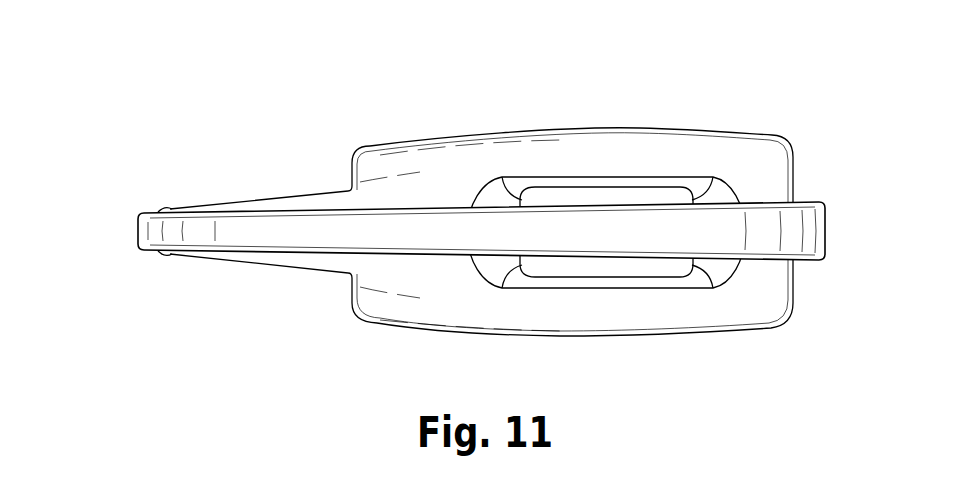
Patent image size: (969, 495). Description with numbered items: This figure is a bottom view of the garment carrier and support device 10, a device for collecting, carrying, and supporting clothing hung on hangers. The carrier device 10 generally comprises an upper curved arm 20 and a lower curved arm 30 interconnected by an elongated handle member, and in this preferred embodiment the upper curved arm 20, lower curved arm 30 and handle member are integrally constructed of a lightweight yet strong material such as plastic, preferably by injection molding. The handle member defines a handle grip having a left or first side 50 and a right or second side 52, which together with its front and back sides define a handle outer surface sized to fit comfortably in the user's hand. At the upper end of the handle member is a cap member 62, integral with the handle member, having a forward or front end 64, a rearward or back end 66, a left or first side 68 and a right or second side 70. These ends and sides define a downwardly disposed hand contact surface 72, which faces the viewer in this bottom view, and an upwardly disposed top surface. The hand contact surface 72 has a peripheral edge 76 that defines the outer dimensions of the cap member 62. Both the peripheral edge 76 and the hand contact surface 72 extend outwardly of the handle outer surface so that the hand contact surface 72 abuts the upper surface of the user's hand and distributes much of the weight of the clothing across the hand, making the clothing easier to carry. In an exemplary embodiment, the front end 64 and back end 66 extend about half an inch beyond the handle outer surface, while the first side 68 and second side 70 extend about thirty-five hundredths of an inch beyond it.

The garment carrier and support device 10 is at (804, 70).
The upper curved arm 20 is at (293, 262).
The lower curved arm 30 is at (398, 236).
The first side 50 is at (588, 176).
The second side 52 is at (612, 288).
The cap member 62 is at (577, 224).
The front end 64 is at (348, 170).
The back end 66 is at (797, 186).
The first side 68 is at (428, 330).
The second side 70 is at (700, 130).
The hand contact surface 72 is at (758, 158).
The peripheral edge 76 is at (472, 133).